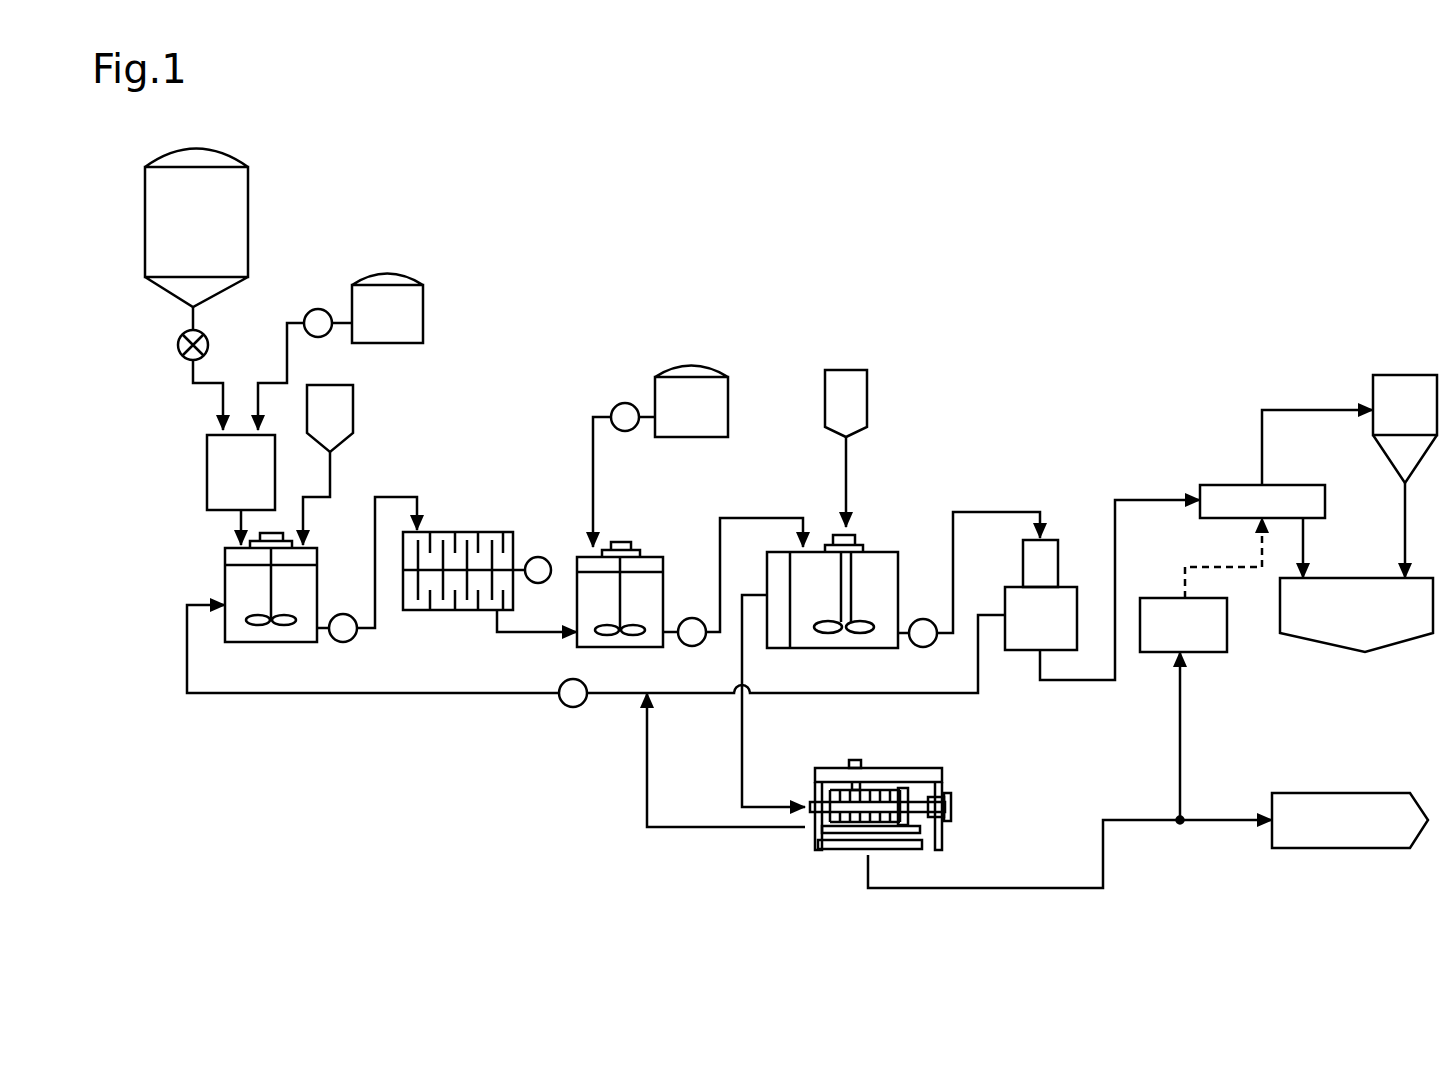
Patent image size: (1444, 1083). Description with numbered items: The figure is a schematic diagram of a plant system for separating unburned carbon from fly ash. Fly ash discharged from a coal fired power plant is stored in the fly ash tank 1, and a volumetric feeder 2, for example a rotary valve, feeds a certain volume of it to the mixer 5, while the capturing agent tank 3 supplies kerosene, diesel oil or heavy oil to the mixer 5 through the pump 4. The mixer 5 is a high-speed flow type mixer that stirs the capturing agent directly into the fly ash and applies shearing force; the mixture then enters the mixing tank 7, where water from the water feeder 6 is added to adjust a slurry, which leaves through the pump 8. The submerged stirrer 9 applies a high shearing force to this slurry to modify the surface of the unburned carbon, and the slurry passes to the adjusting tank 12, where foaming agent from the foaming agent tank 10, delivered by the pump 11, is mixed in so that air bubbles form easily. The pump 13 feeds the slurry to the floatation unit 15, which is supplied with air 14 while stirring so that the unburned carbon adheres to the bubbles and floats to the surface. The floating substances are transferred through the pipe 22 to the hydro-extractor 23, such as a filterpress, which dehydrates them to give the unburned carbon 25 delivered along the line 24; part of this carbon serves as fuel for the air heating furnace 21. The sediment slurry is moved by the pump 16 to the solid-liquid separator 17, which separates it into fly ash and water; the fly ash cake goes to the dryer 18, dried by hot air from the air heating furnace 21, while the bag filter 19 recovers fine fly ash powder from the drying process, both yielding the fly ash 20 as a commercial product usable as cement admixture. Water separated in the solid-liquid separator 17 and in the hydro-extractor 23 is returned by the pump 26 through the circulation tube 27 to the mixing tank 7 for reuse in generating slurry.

The fly ash tank 1 is at (250, 196).
The volumetric feeder 2 is at (178, 341).
The capturing agent tank 3 is at (420, 276).
The pump 4 is at (315, 308).
The mixer 5 is at (205, 488).
The water feeder 6 is at (354, 398).
The mixing tank 7 is at (222, 576).
The slurry pump 8 is at (343, 613).
The submerged stirrer 9 is at (498, 530).
The foaming agent tank 10 is at (727, 368).
The pump 11 is at (623, 402).
The adjusting tank 12 is at (650, 553).
The pump 13 is at (692, 618).
The air supply 14 is at (848, 368).
The floatation unit 15 is at (882, 548).
The pump 16 is at (923, 619).
The solid-liquid separator 17 is at (1050, 540).
The dryer 18 is at (1220, 485).
The bag filter 19 is at (1373, 392).
The fly ash as a commercial product 20 is at (1390, 655).
The air heating furnace 21 is at (1227, 640).
The pipe 22 is at (742, 752).
The hydro-extractor 23 is at (945, 785).
The unburned carbon line 24 is at (998, 888).
The unburned carbon 25 is at (1340, 793).
The pump 26 is at (573, 708).
The circulation tube 27 is at (440, 700).